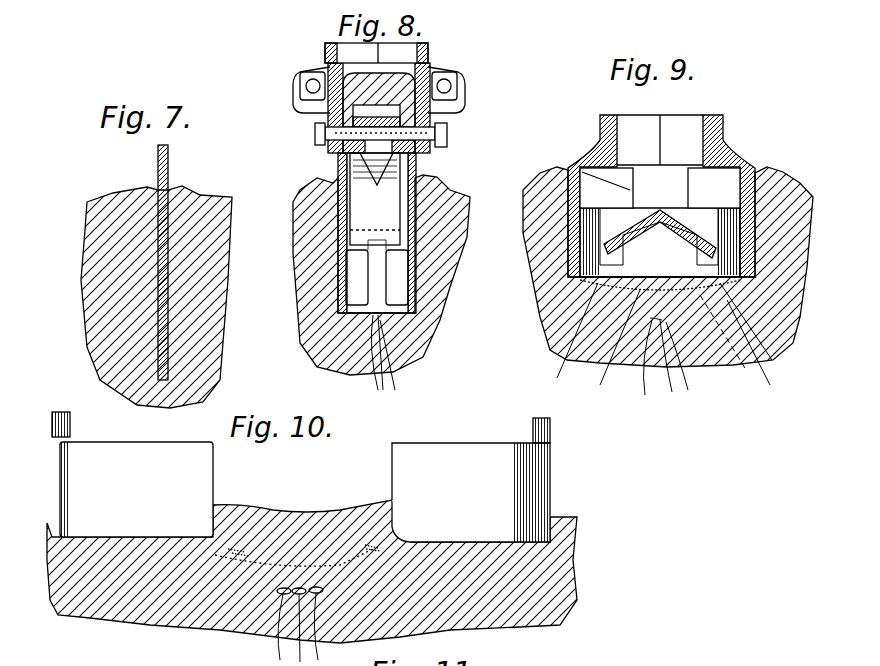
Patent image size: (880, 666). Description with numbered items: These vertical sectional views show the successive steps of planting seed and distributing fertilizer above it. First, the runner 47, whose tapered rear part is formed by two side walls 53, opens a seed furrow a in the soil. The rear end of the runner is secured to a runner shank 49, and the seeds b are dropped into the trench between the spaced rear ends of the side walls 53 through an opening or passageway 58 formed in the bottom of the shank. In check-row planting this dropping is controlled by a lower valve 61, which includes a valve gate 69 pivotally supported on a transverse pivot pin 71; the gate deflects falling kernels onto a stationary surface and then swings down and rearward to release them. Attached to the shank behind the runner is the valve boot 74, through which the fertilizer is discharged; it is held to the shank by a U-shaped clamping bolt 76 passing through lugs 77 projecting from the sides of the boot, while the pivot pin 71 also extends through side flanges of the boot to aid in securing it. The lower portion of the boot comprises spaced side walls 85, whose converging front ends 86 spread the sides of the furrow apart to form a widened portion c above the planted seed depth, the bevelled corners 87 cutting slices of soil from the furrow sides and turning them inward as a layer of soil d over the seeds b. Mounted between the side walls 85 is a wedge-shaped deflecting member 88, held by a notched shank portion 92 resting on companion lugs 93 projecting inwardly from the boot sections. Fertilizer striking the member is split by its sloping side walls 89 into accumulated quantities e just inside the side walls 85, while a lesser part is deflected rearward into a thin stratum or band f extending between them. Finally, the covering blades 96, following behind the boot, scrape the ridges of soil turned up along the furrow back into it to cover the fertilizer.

In FIG. 7, the runner 47 is at (158, 171).
In FIG. 8, the runner shank 49 is at (325, 50).
In FIG. 8, the lugs 77 is at (300, 70).
In FIG. 8, the U-shaped clamping bolt 76 is at (306, 87).
In FIG. 8, the transverse pivot pin 71 is at (340, 133).
In FIG. 8, the valve gate 69 is at (330, 158).
In FIG. 8, the opening or passageway 58 is at (395, 166).
In FIG. 8, the lower valve 61 is at (355, 232).
In FIG. 8, the side walls 53 is at (340, 238).
In FIG. 9, the side walls 53 is at (754, 352).
In FIG. 9, the valve boot 74 is at (590, 150).
In FIG. 9, the side walls or wings 85 is at (568, 225).
In FIG. 9, the converging front ends 86 is at (582, 255).
In FIG. 9, the bevelled corners 87 is at (590, 276).
In FIG. 9, the deflecting member 88 is at (660, 235).
In FIG. 9, the sloping side walls 89 is at (612, 203).
In FIG. 9, the shank portion 92 is at (583, 177).
In FIG. 9, the lugs 93 is at (632, 175).
In FIG. 10, the covering blades 96 is at (70, 437).
In FIG. 8, the seed furrow a is at (340, 294).
In FIG. 9, the seed furrow a is at (628, 283).
In FIG. 8, the seeds b is at (383, 364).
In FIG. 9, the seeds b is at (666, 372).
In FIG. 10, the seeds b is at (308, 626).
In FIG. 9, the widened portion c is at (785, 190).
In FIG. 9, the layer of soil d is at (722, 342).
In FIG. 9, the accumulated quantities e is at (662, 337).
In FIG. 10, the accumulated quantities e is at (237, 548).
In FIG. 9, the thin stratum or band f is at (614, 349).
In FIG. 10, the thin stratum or band f is at (292, 562).